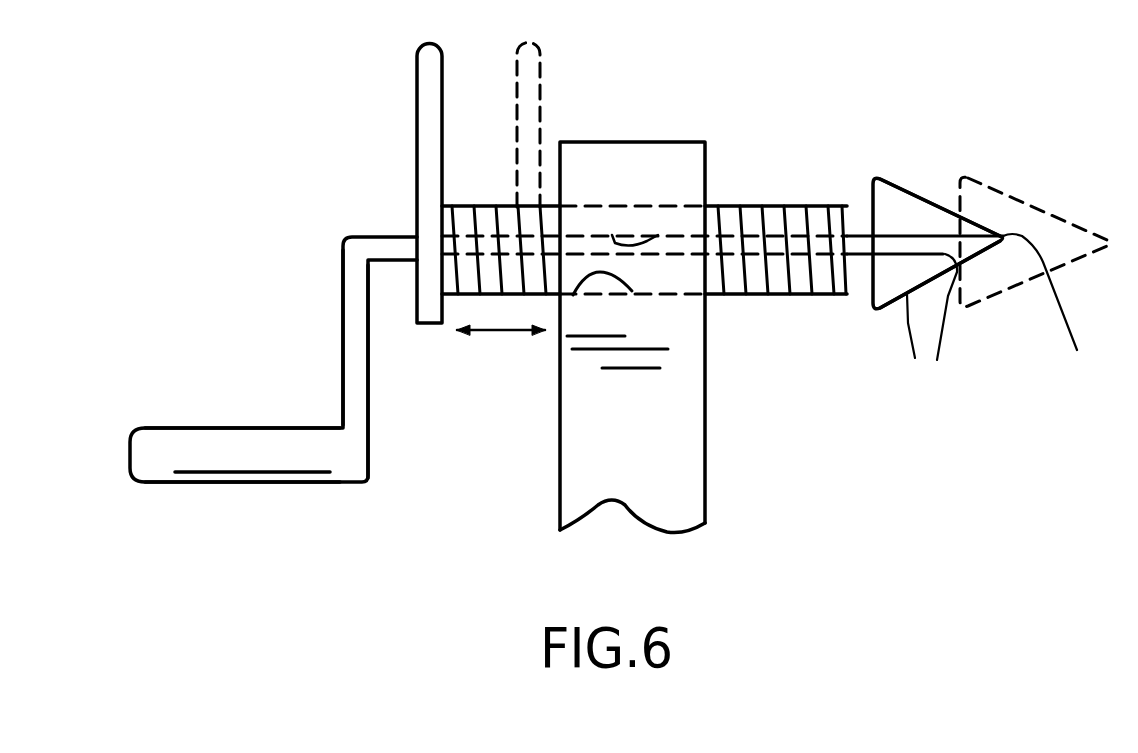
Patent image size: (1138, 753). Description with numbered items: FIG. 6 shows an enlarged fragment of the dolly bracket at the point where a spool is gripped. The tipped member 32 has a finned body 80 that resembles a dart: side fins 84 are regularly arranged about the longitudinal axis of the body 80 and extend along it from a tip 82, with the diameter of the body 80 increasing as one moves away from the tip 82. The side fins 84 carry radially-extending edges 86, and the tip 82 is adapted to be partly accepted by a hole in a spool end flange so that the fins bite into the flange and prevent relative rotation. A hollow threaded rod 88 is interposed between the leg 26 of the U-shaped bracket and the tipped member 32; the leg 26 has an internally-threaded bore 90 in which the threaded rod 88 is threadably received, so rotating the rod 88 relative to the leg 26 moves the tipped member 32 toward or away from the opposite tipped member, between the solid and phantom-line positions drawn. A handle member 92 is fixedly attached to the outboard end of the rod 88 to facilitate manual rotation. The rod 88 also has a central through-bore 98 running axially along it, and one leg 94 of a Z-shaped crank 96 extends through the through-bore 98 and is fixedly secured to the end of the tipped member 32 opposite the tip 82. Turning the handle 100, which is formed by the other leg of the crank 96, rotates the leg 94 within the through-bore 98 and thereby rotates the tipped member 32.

The leg 26 is at (668, 430).
The tipped member 32 is at (1048, 235).
The finned body 80 is at (912, 230).
The tip 82 is at (1107, 248).
The side fins 84 is at (894, 183).
The radially-extending edges 86 is at (932, 323).
The hollow threaded rod 88 is at (797, 205).
The internally-threaded bore 90 is at (573, 296).
The handle member 92 is at (417, 102).
The leg of Z-shaped crank 94 is at (385, 237).
The Z-shaped crank 96 is at (343, 343).
The central through-bore 98 is at (612, 232).
The handle 100 is at (242, 485).